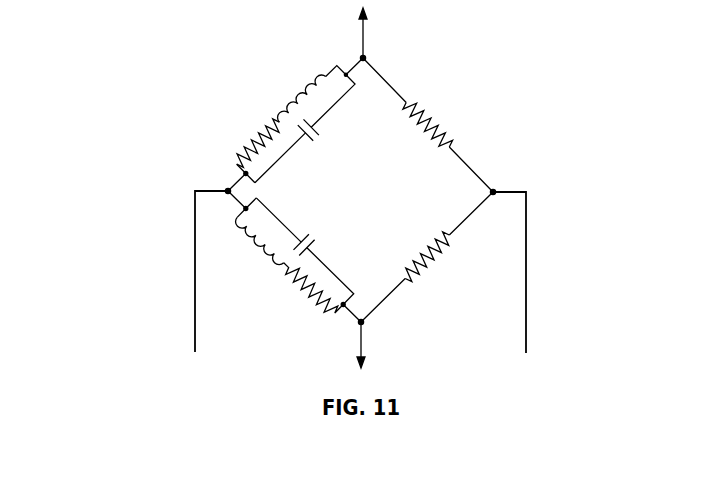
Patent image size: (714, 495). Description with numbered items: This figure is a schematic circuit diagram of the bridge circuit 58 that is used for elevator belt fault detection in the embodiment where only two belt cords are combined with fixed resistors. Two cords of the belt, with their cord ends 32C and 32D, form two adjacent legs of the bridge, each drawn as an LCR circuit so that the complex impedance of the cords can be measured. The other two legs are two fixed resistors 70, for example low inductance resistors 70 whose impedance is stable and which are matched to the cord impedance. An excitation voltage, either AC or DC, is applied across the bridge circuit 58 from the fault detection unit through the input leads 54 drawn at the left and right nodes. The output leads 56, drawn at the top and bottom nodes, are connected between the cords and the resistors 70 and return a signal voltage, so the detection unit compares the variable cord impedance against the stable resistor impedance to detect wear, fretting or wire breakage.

The bridge circuit 58 is at (328, 200).
The fixed resistor 70 is at (428, 112).
The cord end 32D is at (361, 56).
The cord end 32C is at (227, 192).
The output lead 56 is at (366, 30).
The input lead 54 is at (193, 302).